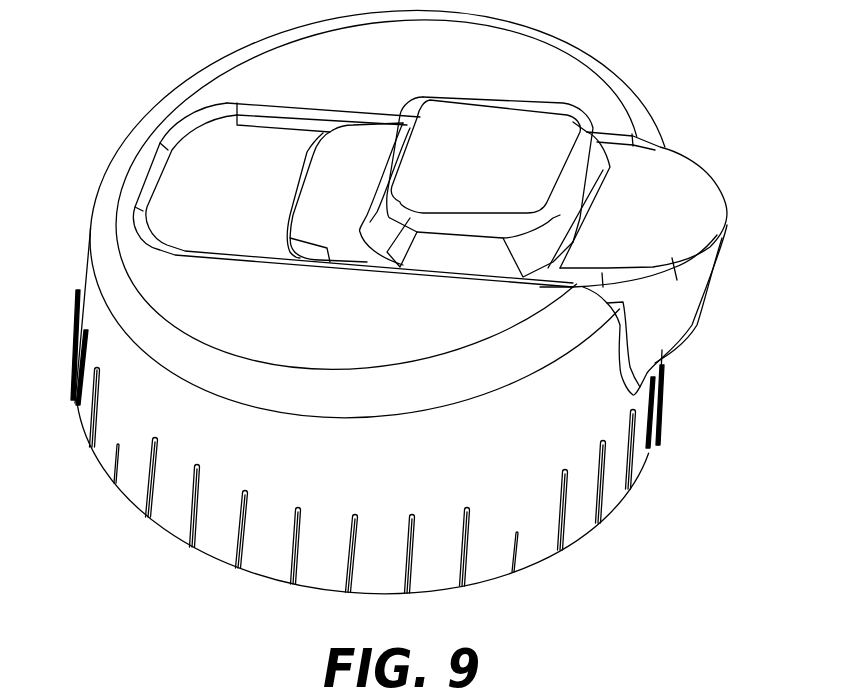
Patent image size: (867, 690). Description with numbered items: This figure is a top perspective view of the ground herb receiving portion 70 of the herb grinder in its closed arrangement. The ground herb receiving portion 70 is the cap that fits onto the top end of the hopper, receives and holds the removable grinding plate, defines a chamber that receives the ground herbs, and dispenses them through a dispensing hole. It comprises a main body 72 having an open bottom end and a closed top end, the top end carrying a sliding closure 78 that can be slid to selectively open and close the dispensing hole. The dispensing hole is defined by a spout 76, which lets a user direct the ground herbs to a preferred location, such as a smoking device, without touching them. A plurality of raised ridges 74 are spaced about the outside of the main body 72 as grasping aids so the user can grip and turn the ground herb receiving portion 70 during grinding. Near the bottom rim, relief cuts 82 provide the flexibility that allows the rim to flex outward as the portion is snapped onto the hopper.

The ground herb receiving portion 70 is at (712, 79).
The main body 72 is at (143, 403).
The raised ridges 74 is at (242, 535).
The spout 76 is at (673, 330).
The sliding closure 78 is at (693, 203).
The relief cuts 82 is at (511, 574).